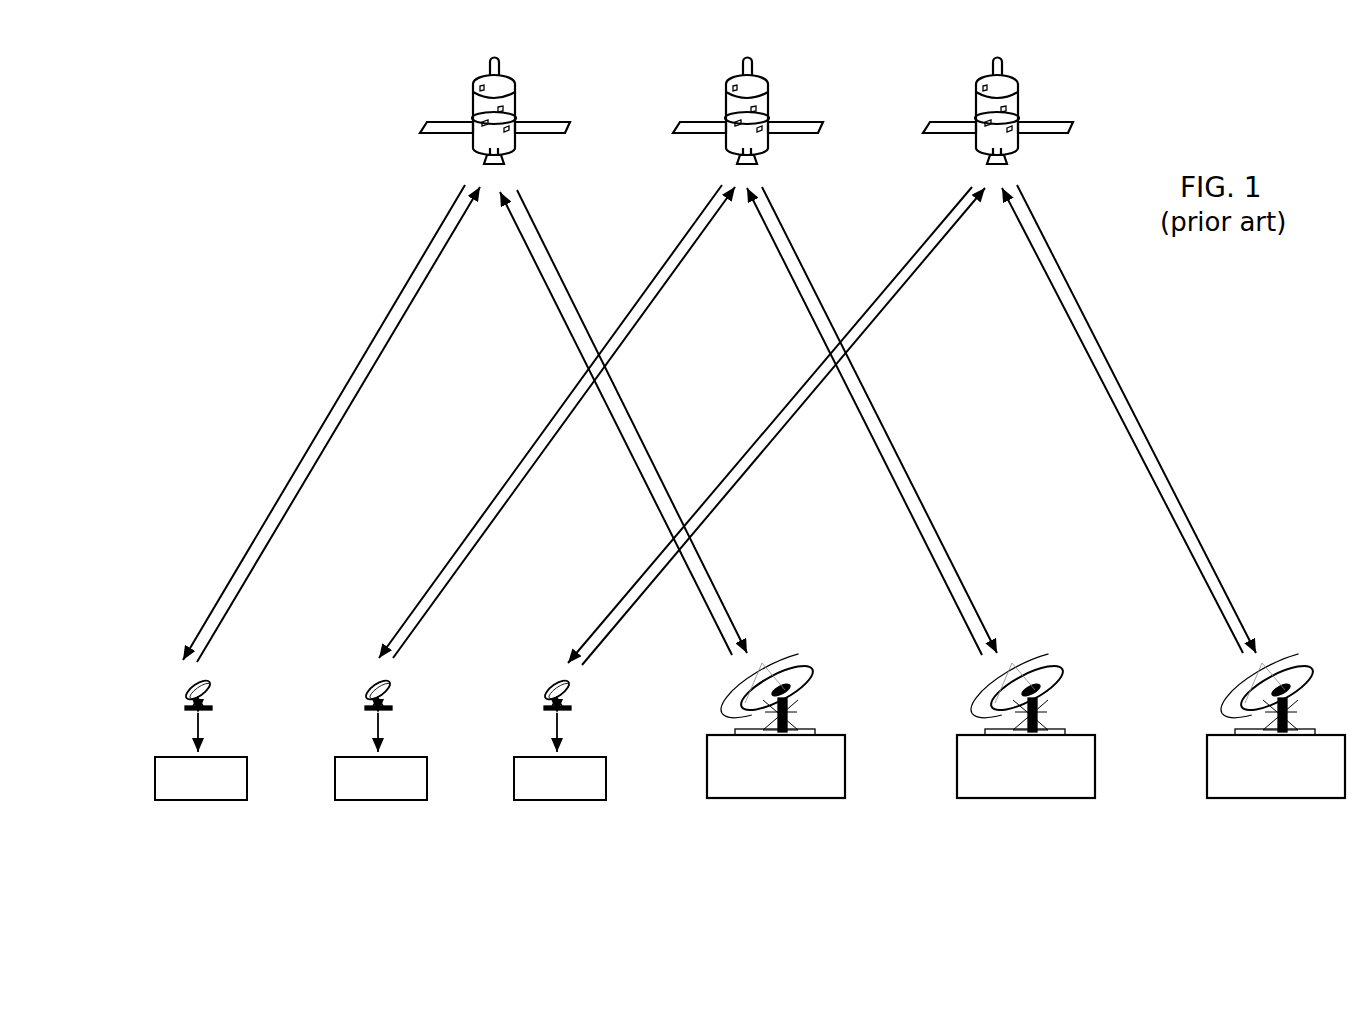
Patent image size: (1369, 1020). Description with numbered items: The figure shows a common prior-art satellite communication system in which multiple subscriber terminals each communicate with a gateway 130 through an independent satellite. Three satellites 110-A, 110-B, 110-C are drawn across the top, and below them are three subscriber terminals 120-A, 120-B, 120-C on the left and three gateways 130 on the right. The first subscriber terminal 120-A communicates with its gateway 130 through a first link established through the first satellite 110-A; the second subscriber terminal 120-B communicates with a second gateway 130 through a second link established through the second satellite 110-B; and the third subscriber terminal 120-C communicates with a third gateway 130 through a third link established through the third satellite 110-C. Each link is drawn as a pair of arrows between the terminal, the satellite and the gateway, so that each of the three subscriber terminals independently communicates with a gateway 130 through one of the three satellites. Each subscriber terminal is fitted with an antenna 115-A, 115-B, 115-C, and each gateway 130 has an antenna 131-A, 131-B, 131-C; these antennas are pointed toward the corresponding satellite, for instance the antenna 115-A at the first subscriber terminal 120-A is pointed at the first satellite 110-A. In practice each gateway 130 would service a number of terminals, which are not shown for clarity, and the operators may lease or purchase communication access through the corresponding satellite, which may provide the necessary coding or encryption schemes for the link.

The first satellite 110-A is at (482, 110).
The second satellite 110-B is at (748, 111).
The third satellite 110-C is at (998, 111).
The antenna 115-A is at (188, 687).
The antenna 115-B is at (348, 681).
The antenna 115-C is at (527, 681).
The first subscriber terminal 120-A is at (195, 800).
The second subscriber terminal 120-B is at (381, 789).
The third subscriber terminal 120-C is at (560, 789).
The antenna 131-A is at (745, 704).
The antenna 131-B is at (1002, 693).
The antenna 131-C is at (1252, 693).
The gateway 130 is at (742, 794).